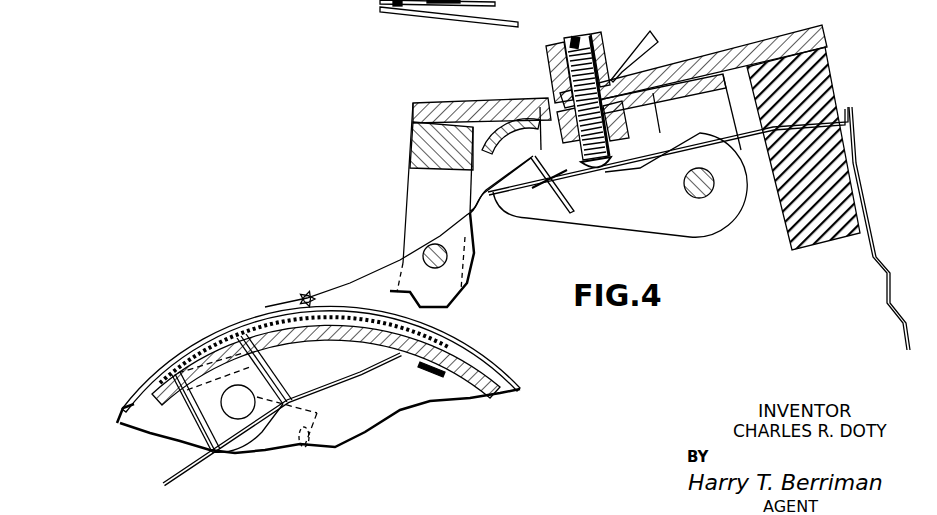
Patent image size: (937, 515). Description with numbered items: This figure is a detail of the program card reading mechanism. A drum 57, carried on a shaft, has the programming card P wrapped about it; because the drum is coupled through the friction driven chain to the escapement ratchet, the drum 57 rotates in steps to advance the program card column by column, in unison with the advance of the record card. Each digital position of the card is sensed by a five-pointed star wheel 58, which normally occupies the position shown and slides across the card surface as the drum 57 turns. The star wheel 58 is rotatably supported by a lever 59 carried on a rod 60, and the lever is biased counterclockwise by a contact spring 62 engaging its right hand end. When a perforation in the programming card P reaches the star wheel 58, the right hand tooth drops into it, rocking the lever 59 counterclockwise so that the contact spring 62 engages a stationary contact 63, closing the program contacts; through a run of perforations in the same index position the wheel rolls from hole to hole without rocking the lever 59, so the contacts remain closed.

The drum 57 is at (463, 398).
The star wheel 58 is at (307, 290).
The lever 59 is at (332, 292).
The rod 60 is at (447, 250).
The contact spring 62 is at (590, 176).
The stationary contact 63 is at (574, 37).
The programming card P is at (487, 364).